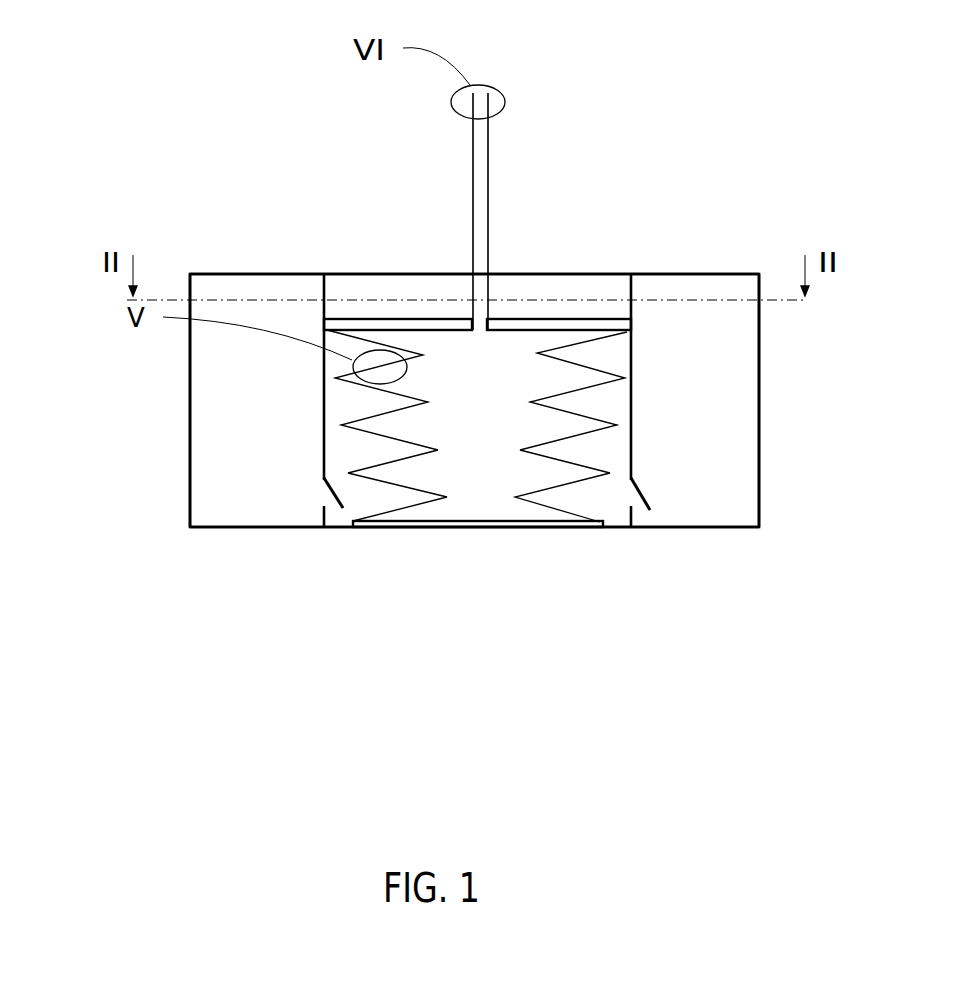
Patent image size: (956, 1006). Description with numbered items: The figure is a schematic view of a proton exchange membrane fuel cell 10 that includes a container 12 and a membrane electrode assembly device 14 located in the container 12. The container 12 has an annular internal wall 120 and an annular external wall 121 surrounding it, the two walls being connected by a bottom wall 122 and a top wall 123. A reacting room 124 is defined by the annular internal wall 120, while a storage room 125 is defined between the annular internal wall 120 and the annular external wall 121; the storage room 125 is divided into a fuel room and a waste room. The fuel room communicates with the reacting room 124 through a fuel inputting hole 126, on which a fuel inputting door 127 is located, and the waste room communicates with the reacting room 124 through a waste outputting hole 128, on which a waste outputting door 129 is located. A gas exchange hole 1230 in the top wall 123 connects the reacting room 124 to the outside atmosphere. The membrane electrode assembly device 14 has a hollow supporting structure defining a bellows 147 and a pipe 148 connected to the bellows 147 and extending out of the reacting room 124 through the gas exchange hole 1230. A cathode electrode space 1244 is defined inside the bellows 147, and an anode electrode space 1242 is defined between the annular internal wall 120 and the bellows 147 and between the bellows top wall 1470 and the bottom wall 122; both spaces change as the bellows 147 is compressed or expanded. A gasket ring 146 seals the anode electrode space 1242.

The proton exchange membrane fuel cell 10 is at (436, 144).
The container 12 is at (184, 358).
The membrane electrode assembly device 14 is at (606, 401).
The annular internal wall 120 is at (633, 352).
The annular external wall 121 is at (759, 420).
The bottom wall 122 is at (217, 533).
The top wall 123 is at (285, 272).
The reacting room 124 is at (80, 430).
The anode electrode space 1242 is at (352, 403).
The cathode electrode space 1244 is at (353, 448).
The storage room 125 is at (222, 387).
The fuel inputting hole 126 is at (323, 492).
The fuel inputting door 127 is at (345, 502).
The waste outputting hole 128 is at (628, 492).
The waste outputting door 129 is at (652, 500).
The gas exchange hole 1230 is at (482, 277).
The gasket ring 146 is at (400, 322).
The bellows 147 is at (600, 445).
The bellows top wall 1470 is at (560, 330).
The pipe 148 is at (489, 147).